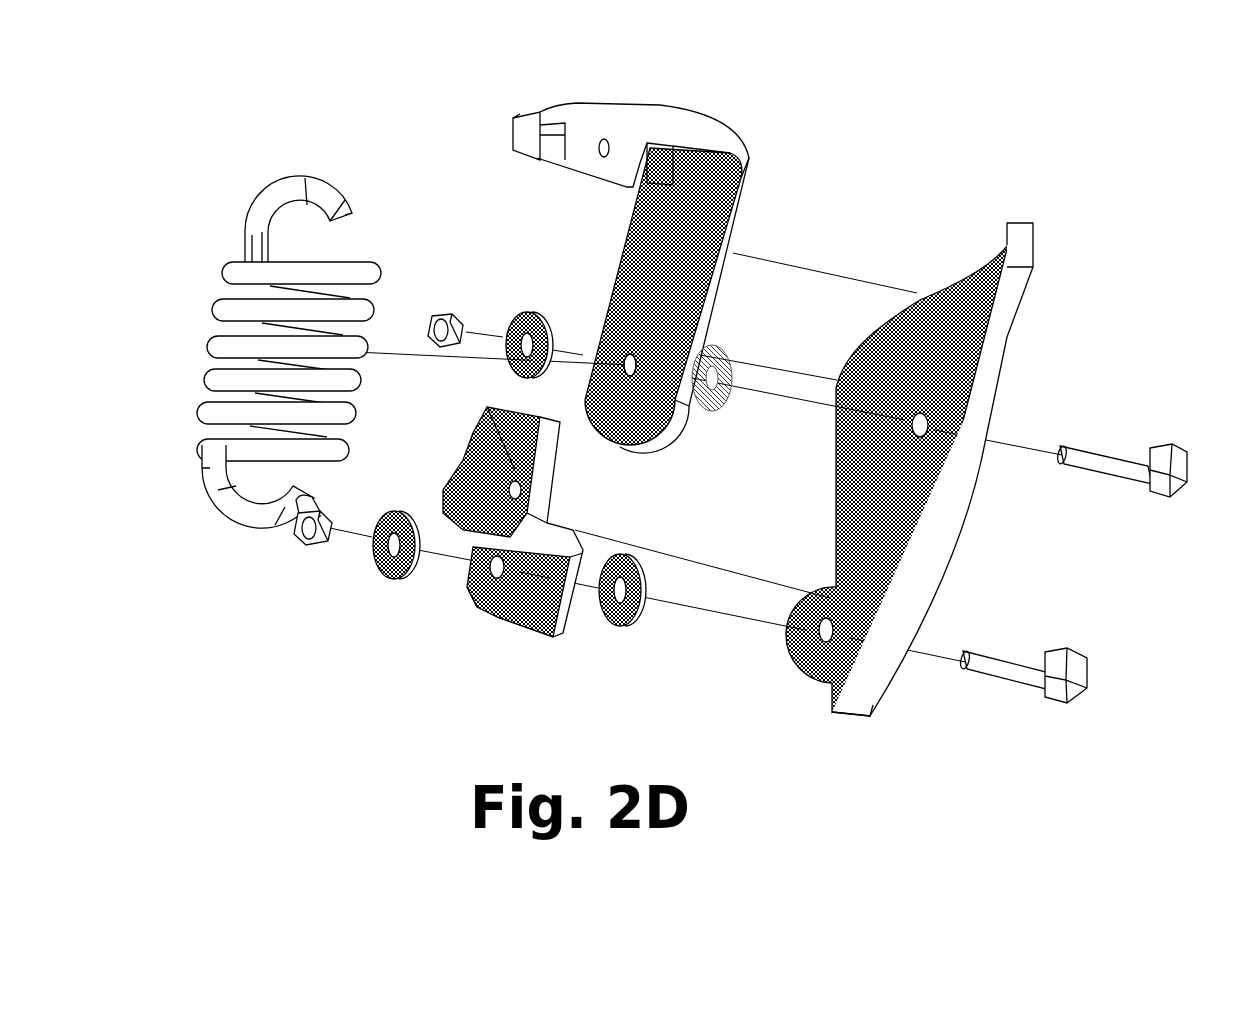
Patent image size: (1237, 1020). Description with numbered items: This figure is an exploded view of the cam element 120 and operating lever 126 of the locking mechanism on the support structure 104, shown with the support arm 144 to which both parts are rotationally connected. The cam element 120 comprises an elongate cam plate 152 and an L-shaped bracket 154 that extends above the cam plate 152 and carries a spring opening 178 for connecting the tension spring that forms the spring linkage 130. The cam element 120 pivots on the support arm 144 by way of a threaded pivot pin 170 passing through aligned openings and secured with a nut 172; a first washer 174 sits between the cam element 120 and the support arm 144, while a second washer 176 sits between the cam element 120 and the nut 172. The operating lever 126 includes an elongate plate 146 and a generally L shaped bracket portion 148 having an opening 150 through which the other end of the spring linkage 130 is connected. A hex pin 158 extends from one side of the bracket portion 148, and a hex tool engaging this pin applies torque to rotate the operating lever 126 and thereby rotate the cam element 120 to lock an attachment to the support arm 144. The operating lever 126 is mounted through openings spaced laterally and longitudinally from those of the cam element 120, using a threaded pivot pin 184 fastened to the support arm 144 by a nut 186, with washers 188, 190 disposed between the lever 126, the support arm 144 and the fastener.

The support structure 104 is at (1024, 370).
The cam element 120 is at (412, 630).
The operating lever 126 is at (634, 306).
The spring linkage 130 is at (290, 176).
The support arm 144 is at (969, 458).
The elongate plate 146 is at (681, 260).
The L shaped bracket portion 148 is at (712, 130).
The opening 150 is at (663, 110).
The elongate cam plate 152 is at (548, 608).
The L-shaped bracket 154 is at (570, 519).
The hex pin 158 is at (535, 118).
The threaded pivot pin 170 is at (1088, 688).
The nut 172 is at (338, 514).
The first washer 174 is at (633, 637).
The second washer 176 is at (362, 576).
The spring opening 178 is at (488, 437).
The threaded pivot pin 184 is at (1145, 497).
The nut 186 is at (440, 318).
The washer 188 is at (720, 367).
The washer 190 is at (527, 310).